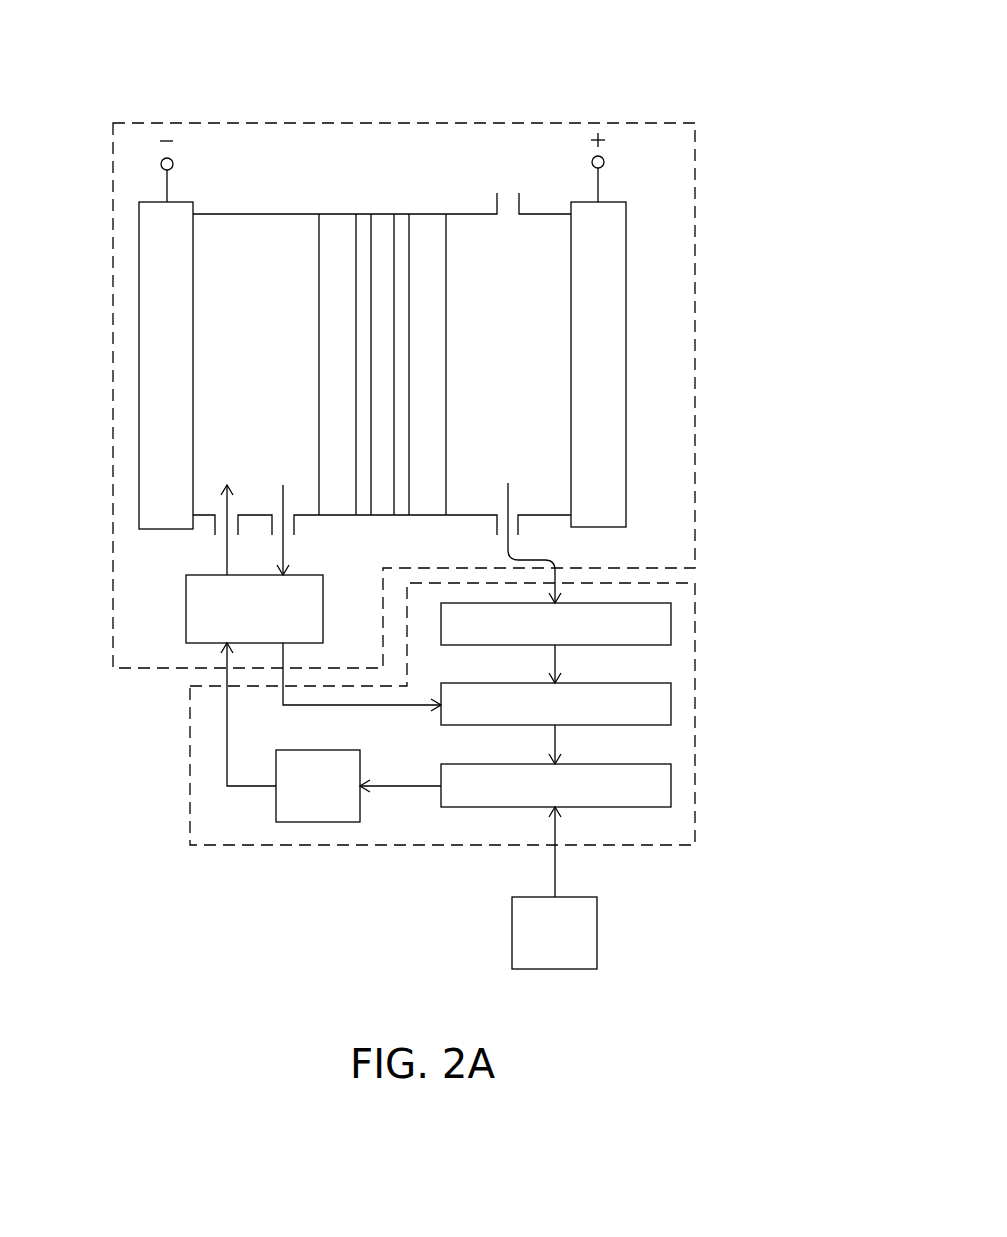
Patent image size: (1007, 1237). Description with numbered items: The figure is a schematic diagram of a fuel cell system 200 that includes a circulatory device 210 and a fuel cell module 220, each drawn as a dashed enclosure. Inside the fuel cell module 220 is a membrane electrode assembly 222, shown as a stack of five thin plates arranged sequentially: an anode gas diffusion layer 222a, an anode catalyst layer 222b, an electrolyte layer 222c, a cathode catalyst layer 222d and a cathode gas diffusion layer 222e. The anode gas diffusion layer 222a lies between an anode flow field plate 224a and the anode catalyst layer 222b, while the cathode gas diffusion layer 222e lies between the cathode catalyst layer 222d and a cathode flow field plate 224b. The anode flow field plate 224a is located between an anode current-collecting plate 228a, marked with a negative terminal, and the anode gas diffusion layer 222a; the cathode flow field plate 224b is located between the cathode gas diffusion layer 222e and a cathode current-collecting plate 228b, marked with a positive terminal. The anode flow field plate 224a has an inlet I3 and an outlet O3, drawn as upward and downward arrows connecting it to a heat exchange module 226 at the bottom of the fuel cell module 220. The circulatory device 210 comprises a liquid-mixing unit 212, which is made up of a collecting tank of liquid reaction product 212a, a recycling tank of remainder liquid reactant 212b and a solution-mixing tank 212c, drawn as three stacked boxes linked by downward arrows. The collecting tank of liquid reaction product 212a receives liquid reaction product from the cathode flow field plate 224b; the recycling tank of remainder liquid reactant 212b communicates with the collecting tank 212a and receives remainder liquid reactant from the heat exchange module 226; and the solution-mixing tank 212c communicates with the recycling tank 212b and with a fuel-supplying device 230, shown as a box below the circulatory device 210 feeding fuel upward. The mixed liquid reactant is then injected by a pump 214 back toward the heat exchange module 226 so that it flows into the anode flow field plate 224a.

The fuel cell system 200 is at (778, 1023).
The circulatory device 210 is at (190, 748).
The liquid-mixing unit 212 is at (773, 605).
The collecting tank of liquid reaction product 212a is at (671, 622).
The recycling tank of remainder liquid reactant 212b is at (671, 703).
The solution-mixing tank 212c is at (671, 786).
The pump 214 is at (276, 808).
The fuel cell module 220 is at (695, 352).
The membrane electrode assembly 222 is at (540, 61).
The anode gas diffusion layer 222a is at (337, 230).
The anode catalyst layer 222b is at (364, 230).
The electrolyte layer 222c is at (381, 230).
The cathode catalyst layer 222d is at (402, 230).
The cathode gas diffusion layer 222e is at (428, 227).
The anode flow field plate 224a is at (246, 248).
The cathode flow field plate 224b is at (543, 237).
The heat exchange module 226 is at (186, 605).
The anode current-collecting plate 228a is at (160, 223).
The cathode current-collecting plate 228b is at (600, 220).
The fuel-supplying device 230 is at (597, 935).
The inlet I3 is at (226, 542).
The outlet O3 is at (290, 533).